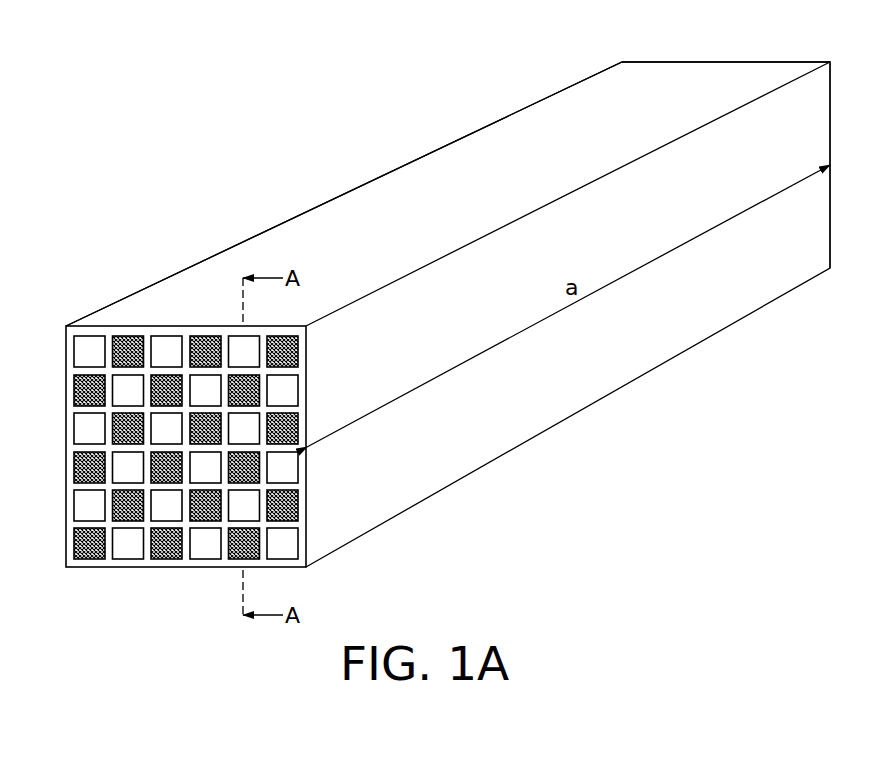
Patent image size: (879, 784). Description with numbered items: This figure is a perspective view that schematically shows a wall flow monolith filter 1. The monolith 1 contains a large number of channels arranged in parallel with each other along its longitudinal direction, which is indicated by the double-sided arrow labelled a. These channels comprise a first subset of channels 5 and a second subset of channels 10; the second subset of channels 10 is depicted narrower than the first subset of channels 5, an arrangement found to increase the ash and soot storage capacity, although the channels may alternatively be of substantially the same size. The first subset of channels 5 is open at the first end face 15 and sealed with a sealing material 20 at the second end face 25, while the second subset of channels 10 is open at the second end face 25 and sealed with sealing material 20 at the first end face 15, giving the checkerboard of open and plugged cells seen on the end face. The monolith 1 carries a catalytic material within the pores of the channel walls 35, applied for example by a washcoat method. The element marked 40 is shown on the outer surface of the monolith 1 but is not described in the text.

The wall flow monolith filter 1 is at (328, 147).
The first subset of channels 5 is at (127, 550).
The second subset of channels 10 is at (82, 463).
The first end face 15 is at (72, 368).
The sealing material 20 is at (82, 540).
The second end face 25 is at (707, 62).
The channel walls 35 is at (296, 540).
The outer surface 40 is at (407, 175).